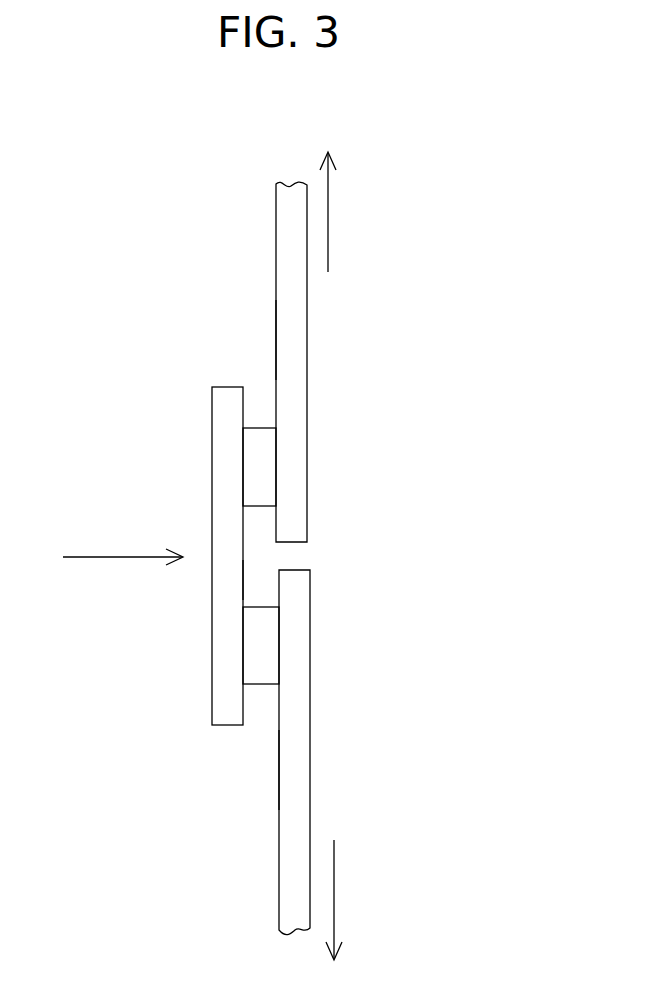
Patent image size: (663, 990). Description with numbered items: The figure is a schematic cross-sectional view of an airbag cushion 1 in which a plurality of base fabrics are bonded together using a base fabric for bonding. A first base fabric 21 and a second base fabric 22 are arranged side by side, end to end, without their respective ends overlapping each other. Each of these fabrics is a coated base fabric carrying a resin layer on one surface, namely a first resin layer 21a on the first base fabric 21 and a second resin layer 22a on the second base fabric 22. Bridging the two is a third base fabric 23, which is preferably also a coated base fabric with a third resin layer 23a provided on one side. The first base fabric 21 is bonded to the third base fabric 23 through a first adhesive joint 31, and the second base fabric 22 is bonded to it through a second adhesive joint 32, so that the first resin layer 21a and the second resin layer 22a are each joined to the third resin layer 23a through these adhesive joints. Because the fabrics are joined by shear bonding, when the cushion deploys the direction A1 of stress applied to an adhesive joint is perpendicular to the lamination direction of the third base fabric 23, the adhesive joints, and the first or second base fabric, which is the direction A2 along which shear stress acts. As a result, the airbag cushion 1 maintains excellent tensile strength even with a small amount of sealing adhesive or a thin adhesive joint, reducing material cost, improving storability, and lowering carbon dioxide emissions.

The airbag cushion 1 is at (386, 295).
The first base fabric 21 is at (295, 365).
The first resin layer 21a is at (274, 342).
The second base fabric 22 is at (297, 747).
The second resin layer 22a is at (277, 772).
The third base fabric 23 is at (226, 475).
The third resin layer 23a is at (258, 575).
The first adhesive joint 31 is at (262, 462).
The second adhesive joint 32 is at (263, 649).
The direction of stress applied to an adhesive joint A1 is at (123, 558).
The direction to which shear stress is applied A2 is at (329, 212).